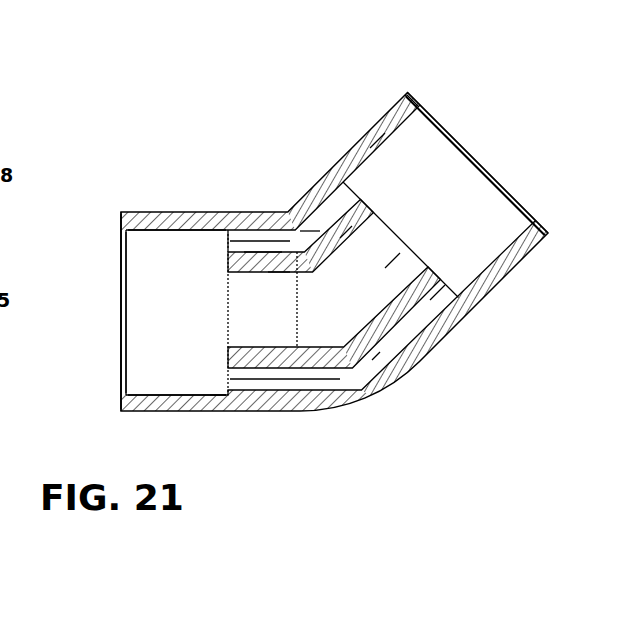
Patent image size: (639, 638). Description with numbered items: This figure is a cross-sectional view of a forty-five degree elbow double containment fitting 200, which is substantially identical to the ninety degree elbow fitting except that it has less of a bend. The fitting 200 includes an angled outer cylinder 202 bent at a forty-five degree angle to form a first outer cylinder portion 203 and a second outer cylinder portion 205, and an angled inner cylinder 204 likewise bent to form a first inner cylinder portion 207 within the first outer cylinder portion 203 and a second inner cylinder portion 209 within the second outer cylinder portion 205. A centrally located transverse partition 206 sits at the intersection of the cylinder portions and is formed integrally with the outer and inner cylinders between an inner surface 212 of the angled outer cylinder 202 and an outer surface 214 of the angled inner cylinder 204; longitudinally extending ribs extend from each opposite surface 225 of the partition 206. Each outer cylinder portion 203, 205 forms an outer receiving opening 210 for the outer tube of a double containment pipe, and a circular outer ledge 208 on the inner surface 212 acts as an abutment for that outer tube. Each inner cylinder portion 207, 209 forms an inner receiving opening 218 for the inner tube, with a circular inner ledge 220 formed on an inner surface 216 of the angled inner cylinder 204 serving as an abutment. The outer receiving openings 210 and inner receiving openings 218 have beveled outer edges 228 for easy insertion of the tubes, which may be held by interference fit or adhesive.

The 45° elbow double containment fitting 200 is at (103, 172).
The angled outer cylinder 202 is at (160, 210).
The first outer cylinder portion 203 is at (230, 413).
The angled inner cylinder 204 is at (272, 248).
The second outer cylinder portion 205 is at (525, 262).
The centrally located transverse partition 206 is at (290, 245).
The first inner cylinder portion 207 is at (302, 369).
The circular outer ledge 208 is at (241, 248).
The second inner cylinder portion 209 is at (440, 294).
The outer receiving opening 210 is at (437, 152).
The inner surface of the angled outer cylinder 212 is at (143, 228).
The outer surface of the angled inner cylinder 214 is at (276, 258).
The inner surface of the angled inner cylinder 216 is at (397, 262).
The inner receiving opening 218 is at (358, 228).
The circular inner ledge 220 is at (252, 262).
The opposite surface of the centrally located transverse partition 225 is at (295, 240).
The beveled outer edge 228 is at (418, 100).